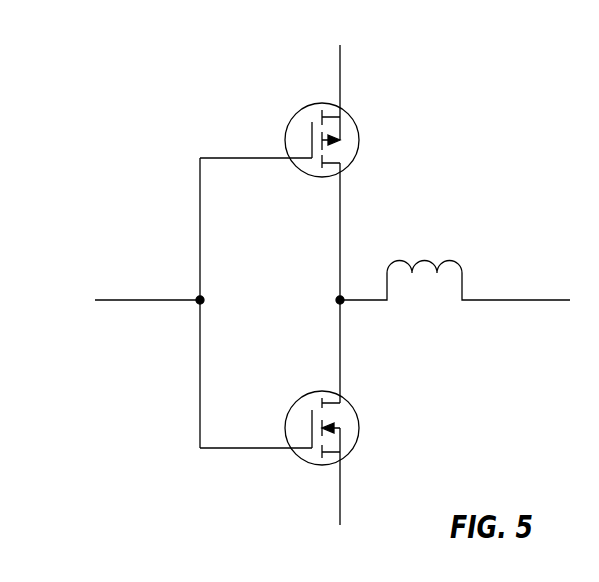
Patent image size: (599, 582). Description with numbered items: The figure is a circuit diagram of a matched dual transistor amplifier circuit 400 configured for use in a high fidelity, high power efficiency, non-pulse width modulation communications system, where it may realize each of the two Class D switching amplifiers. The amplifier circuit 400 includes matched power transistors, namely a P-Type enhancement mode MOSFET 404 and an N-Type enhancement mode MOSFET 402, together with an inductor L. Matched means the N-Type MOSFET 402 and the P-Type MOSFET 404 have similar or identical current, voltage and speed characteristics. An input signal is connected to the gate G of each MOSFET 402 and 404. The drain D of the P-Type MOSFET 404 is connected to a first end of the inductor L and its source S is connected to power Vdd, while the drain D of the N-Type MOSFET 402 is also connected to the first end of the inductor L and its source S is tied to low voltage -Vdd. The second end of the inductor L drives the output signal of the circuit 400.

The amplifier circuit 400 is at (146, 212).
The N-Type enhancement mode MOSFET 402 is at (309, 487).
The P-Type enhancement mode MOSFET 404 is at (291, 92).